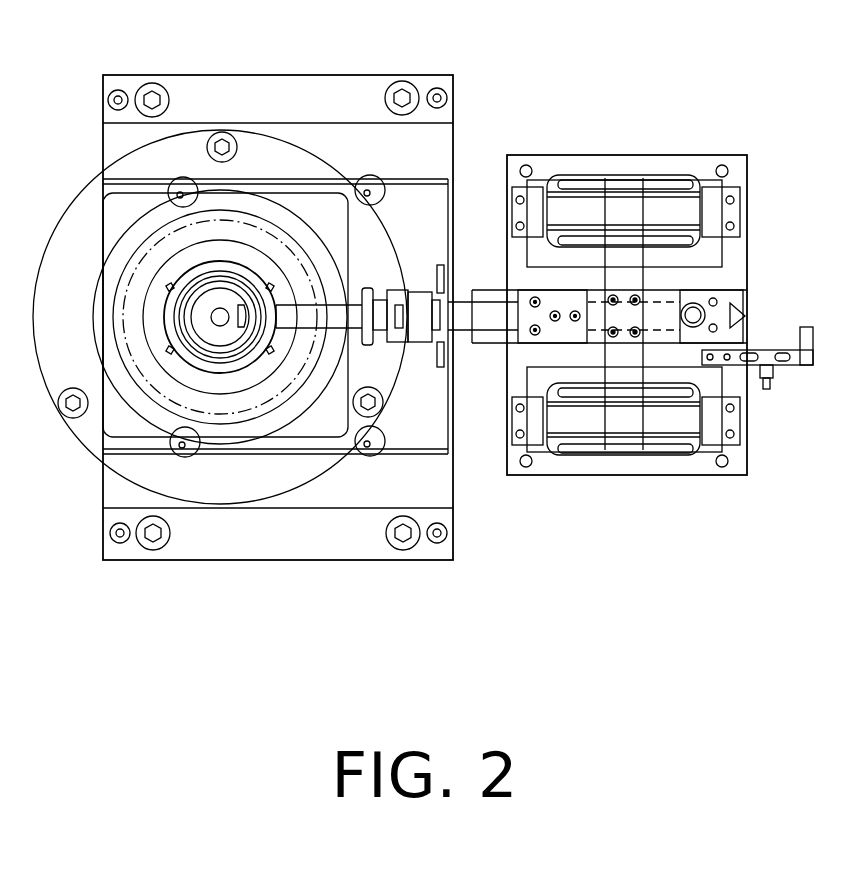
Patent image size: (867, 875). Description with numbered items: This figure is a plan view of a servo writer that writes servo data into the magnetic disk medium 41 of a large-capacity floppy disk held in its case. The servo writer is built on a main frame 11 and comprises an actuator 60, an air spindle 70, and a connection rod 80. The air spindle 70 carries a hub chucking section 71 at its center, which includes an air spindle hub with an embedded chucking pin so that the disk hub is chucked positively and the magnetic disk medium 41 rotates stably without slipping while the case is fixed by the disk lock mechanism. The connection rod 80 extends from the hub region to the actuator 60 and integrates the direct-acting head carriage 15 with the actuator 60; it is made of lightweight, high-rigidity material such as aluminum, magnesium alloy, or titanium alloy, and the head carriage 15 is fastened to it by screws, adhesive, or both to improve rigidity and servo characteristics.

The main frame 11 is at (428, 177).
The direct-acting head carriage 15 is at (405, 288).
The magnetic disk medium 41 is at (52, 226).
The actuator 60 is at (690, 172).
The air spindle 70 is at (325, 193).
The hub chucking section 71 is at (242, 268).
The connection rod 80 is at (535, 290).